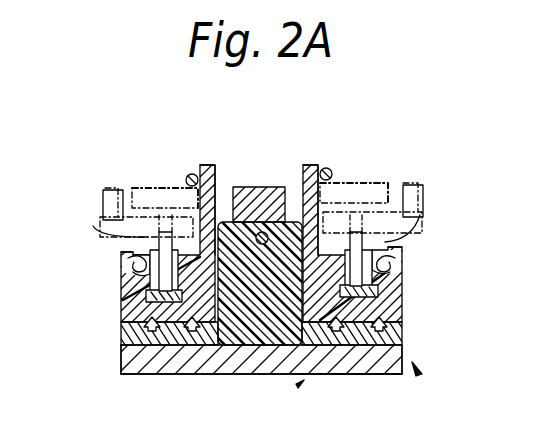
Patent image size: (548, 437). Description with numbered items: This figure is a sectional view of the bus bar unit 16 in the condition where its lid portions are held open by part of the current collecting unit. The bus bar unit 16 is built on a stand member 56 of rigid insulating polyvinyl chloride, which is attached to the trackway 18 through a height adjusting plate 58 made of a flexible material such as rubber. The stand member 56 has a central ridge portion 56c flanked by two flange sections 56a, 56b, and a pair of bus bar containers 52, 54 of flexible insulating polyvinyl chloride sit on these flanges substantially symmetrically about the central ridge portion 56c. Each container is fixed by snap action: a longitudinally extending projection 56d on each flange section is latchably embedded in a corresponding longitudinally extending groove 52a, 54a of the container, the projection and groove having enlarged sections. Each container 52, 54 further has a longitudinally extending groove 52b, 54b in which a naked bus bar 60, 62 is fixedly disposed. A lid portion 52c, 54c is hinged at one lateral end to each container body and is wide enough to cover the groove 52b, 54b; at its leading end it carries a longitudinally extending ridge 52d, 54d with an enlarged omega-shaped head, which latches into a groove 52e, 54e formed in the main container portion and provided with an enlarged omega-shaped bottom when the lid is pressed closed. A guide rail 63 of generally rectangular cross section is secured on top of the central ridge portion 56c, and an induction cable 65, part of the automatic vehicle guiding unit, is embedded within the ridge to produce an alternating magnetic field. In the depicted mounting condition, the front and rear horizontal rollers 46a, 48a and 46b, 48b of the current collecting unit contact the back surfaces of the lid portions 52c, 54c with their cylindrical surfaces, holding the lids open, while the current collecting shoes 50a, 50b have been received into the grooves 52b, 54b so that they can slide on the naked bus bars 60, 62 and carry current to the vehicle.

The bus bar unit 16 is at (422, 374).
The trackway 18 is at (298, 388).
The front horizontal roller 46a is at (455, 145).
The front horizontal roller 46b is at (140, 170).
The rear horizontal roller 48a is at (354, 193).
The rear horizontal roller 48b is at (165, 198).
The current collecting shoe 50a is at (400, 195).
The current collecting shoe 50b is at (97, 222).
The bus bar container 52 is at (402, 320).
The longitudinally extending groove 52a is at (402, 300).
The longitudinally extending groove 52b is at (398, 262).
The lid portion 52c is at (309, 166).
The longitudinally extending ridge 52d is at (332, 174).
The longitudinally extending groove 52e is at (402, 249).
The bus bar container 54 is at (123, 333).
The longitudinally extending groove 54a is at (140, 309).
The longitudinally extending groove 54b is at (127, 266).
The lid portion 54c is at (207, 166).
The longitudinally extending ridge 54d is at (188, 178).
The longitudinally extending groove 54e is at (118, 256).
The stand member 56 is at (230, 360).
The flange section 56a is at (402, 342).
The flange section 56b is at (121, 352).
The central ridge portion 56c is at (222, 235).
The longitudinally extending projection 56d is at (337, 360).
The height adjusting plate 58 is at (155, 363).
The naked bus bar 60 is at (400, 293).
The naked bus bar 62 is at (148, 297).
The guide rail 63 is at (258, 187).
The induction cable 65 is at (266, 235).